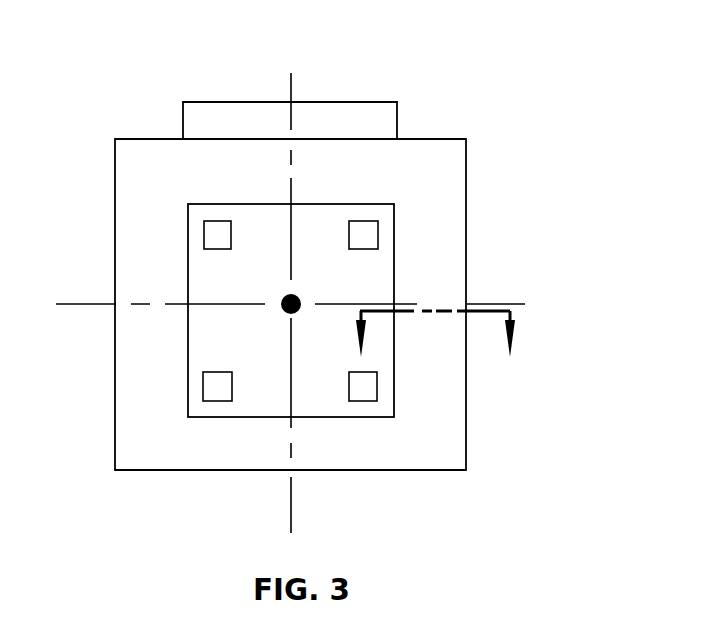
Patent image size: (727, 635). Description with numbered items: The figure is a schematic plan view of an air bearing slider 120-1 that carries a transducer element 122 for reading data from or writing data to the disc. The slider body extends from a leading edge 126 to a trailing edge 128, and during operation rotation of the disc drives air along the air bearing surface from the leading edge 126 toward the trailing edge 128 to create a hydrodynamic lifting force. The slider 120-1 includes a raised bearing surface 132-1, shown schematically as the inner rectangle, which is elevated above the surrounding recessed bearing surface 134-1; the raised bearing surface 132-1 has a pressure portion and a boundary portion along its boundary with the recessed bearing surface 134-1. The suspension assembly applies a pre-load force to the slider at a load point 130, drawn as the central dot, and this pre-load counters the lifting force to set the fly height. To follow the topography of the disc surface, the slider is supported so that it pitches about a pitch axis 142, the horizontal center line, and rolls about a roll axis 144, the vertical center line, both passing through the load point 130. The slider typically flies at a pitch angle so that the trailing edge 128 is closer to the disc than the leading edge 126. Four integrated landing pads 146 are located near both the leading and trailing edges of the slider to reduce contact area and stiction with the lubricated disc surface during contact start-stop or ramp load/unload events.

The air bearing slider 120-1 is at (519, 171).
The transducer element 122 is at (315, 110).
The leading edge 126 is at (366, 470).
The trailing edge 128 is at (418, 139).
The load point 130 is at (300, 297).
The raised bearing surface 132-1 is at (313, 218).
The recessed bearing surface 134-1 is at (440, 268).
The pitch axis 142 is at (507, 303).
The roll axis 144 is at (292, 449).
The landing pads 146 is at (212, 225).